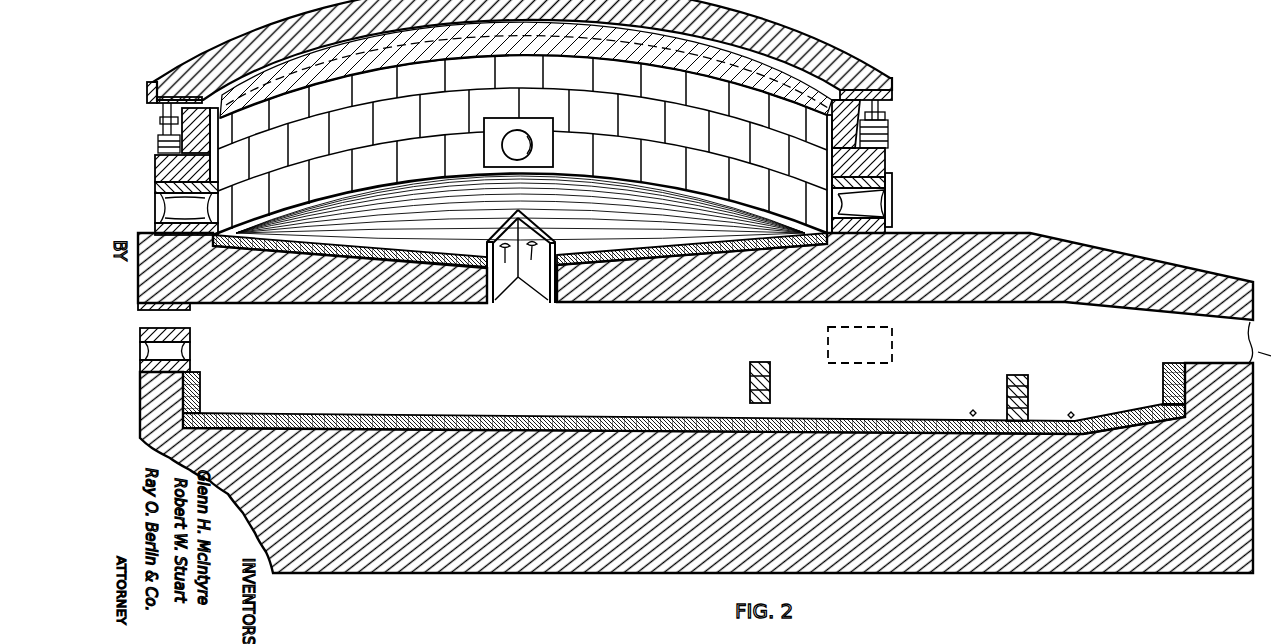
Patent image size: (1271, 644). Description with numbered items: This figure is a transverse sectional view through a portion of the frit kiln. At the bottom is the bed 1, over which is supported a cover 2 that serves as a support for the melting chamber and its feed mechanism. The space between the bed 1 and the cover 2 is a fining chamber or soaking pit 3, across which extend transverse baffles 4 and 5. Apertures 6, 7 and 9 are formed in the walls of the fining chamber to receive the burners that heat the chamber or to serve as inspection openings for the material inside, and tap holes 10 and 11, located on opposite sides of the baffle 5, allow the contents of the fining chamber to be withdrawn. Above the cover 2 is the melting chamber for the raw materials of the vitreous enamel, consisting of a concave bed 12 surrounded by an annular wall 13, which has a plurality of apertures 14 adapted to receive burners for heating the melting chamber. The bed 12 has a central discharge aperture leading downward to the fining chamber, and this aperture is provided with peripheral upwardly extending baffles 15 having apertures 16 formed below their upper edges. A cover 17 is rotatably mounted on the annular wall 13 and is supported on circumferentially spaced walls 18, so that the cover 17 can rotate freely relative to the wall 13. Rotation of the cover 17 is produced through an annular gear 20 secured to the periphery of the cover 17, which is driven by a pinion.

The bed 1 is at (432, 567).
The cover 2 is at (963, 242).
The fining chamber or soaking pit 3 is at (684, 393).
The baffle 4 is at (750, 368).
The baffle 5 is at (1030, 383).
The aperture 6 is at (150, 350).
The aperture 7 is at (155, 318).
The aperture 9 is at (893, 347).
The tap hole 10 is at (975, 410).
The tap hole 11 is at (1072, 412).
The concave bed 12 is at (520, 161).
The annular wall 13 is at (885, 162).
The aperture 14 is at (517, 147).
The baffle 15 is at (537, 232).
The aperture 16 is at (531, 261).
The cover 17 is at (820, 46).
The wall 18 is at (163, 116).
The annular gear 20 is at (160, 98).